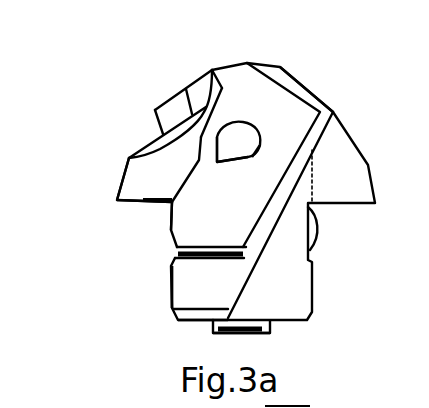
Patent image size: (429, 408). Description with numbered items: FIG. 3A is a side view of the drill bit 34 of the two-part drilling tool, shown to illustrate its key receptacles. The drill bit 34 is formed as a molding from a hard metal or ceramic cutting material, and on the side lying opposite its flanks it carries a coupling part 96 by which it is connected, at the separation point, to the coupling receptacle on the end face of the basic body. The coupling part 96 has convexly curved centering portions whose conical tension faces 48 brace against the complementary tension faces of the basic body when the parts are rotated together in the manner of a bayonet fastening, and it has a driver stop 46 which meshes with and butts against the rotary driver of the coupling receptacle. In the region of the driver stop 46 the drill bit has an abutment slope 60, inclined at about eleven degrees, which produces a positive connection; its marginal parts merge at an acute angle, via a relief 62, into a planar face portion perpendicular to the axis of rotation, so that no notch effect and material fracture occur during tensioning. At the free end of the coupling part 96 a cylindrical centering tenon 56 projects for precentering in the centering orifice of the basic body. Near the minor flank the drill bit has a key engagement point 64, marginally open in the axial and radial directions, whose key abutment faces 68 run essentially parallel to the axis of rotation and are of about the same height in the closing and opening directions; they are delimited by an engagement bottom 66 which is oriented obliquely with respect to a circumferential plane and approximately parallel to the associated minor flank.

The drill bit 34 is at (326, 102).
The driver stop 46 is at (64, 210).
The tension face 48 is at (183, 277).
The centering tenon 56 is at (270, 328).
The abutment slope 60 is at (170, 212).
The relief 62 is at (153, 206).
The key engagement point 64 is at (239, 128).
The engagement bottom 66 is at (217, 150).
The key abutment face 68 is at (215, 148).
The coupling part 96 is at (192, 290).